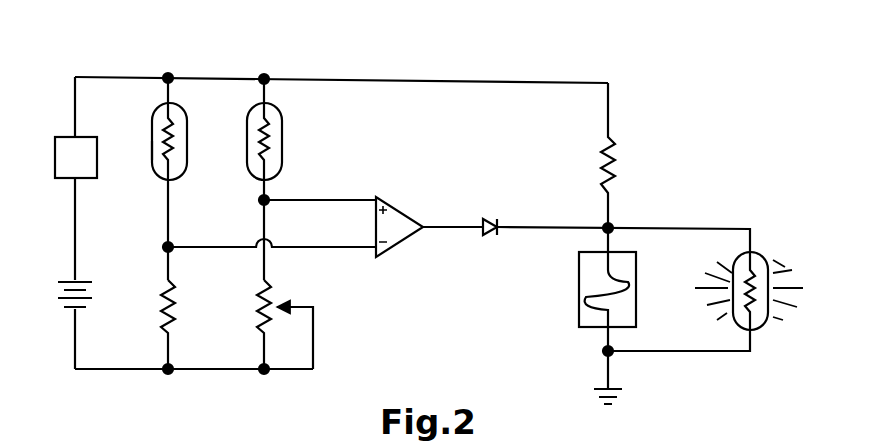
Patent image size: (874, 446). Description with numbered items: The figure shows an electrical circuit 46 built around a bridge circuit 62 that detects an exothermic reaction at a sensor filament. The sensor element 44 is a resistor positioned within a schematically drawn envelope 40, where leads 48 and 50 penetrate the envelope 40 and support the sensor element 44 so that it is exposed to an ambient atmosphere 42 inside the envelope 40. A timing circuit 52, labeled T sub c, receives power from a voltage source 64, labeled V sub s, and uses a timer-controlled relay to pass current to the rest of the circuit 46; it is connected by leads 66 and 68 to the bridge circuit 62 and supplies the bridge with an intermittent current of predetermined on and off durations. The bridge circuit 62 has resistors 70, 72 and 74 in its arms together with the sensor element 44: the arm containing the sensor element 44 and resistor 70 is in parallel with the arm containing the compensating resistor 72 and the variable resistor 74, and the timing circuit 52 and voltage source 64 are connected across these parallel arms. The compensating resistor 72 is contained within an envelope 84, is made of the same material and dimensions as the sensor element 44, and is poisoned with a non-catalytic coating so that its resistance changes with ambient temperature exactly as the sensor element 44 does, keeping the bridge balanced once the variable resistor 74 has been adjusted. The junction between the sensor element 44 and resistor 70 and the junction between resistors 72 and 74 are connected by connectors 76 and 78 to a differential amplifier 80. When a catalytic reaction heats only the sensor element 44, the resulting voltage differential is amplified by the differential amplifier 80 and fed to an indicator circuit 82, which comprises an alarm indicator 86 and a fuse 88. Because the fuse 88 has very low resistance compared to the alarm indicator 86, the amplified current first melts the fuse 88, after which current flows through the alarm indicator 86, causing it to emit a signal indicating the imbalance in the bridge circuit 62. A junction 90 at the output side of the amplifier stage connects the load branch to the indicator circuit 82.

The envelope 40 is at (184, 170).
The ambient atmosphere 42 is at (160, 167).
The sensor element 44 is at (168, 150).
The electrical circuit 46 is at (252, 66).
The lead 48 is at (167, 97).
The lead 50 is at (170, 217).
The timing circuit 52 is at (55, 152).
The bridge circuit 62 is at (222, 390).
The voltage source 64 is at (103, 283).
The lead 66 is at (103, 369).
The lead 68 is at (122, 77).
The resistor 70 is at (163, 291).
The compensating resistor 72 is at (270, 138).
The variable resistor 74 is at (258, 309).
The connector 76 is at (189, 250).
The connector 78 is at (323, 200).
The differential amplifier 80 is at (403, 240).
The indicator circuit 82 is at (705, 212).
The envelope 84 is at (283, 160).
The alarm indicator 86 is at (806, 280).
The fuse 88 is at (583, 298).
The junction with load resistor 90 is at (612, 225).